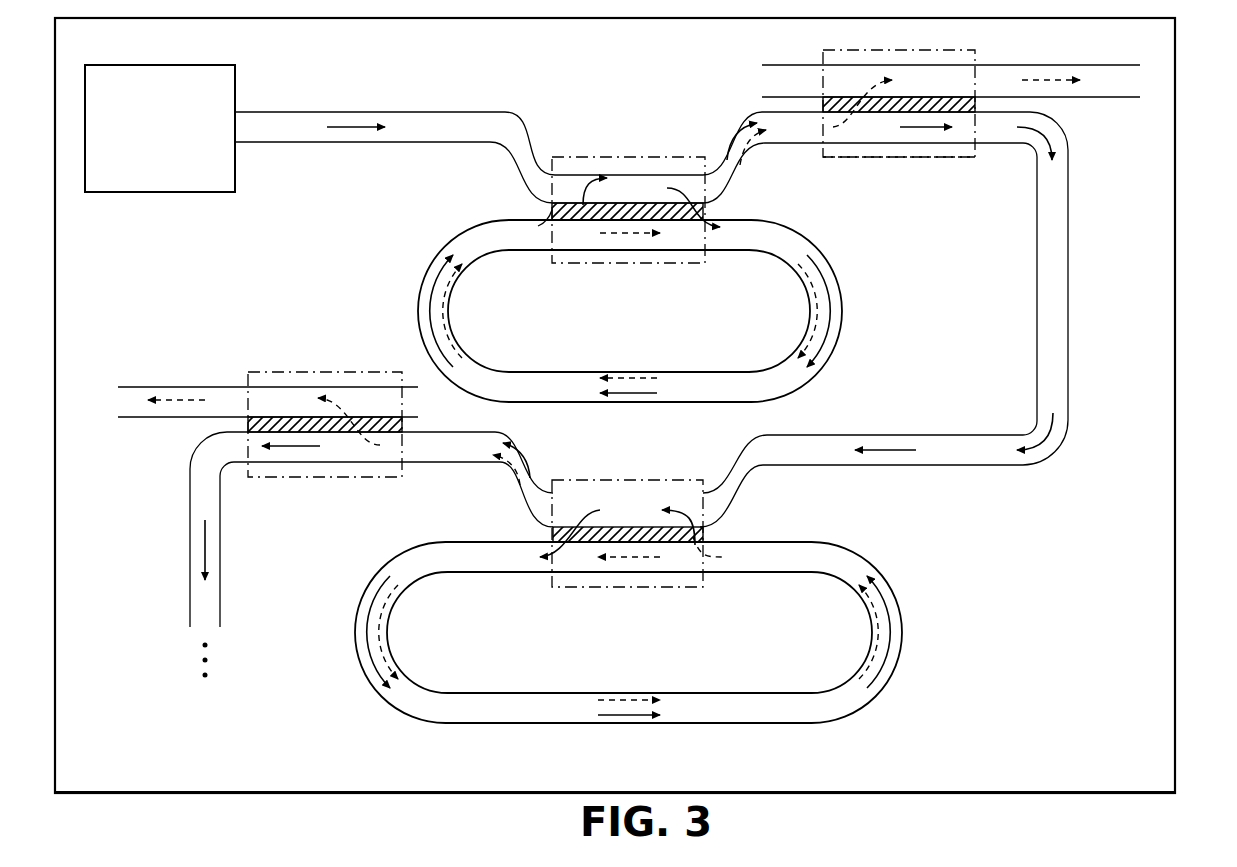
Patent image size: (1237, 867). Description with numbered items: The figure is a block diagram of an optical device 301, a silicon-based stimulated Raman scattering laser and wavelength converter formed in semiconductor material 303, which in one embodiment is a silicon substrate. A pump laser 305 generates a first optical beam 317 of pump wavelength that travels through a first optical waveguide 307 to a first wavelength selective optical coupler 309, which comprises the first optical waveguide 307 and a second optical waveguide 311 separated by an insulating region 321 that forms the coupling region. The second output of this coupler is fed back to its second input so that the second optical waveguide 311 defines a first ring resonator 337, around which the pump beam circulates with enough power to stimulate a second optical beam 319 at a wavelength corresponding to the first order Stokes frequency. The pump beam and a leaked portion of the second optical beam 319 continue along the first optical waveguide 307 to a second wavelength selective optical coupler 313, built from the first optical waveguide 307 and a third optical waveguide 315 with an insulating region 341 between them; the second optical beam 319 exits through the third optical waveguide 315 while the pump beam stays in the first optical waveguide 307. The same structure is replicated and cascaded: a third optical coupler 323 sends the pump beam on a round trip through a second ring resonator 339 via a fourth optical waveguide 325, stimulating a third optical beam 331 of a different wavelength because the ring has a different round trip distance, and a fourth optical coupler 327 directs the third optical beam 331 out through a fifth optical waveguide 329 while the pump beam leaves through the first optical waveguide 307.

The optical device 301 is at (1218, 54).
The semiconductor material 303 is at (1100, 783).
The pump laser 305 is at (172, 65).
The first optical waveguide 307 is at (418, 112).
The first wavelength selective optical coupler 309 is at (595, 158).
The second optical waveguide 311 is at (548, 250).
The second wavelength selective optical coupler 313 is at (890, 160).
The third optical waveguide 315 is at (785, 65).
The first optical beam 317 is at (360, 143).
The second optical beam 319 is at (622, 238).
The insulating region 321 is at (552, 212).
The third optical coupler 323 is at (620, 481).
The fourth optical waveguide 325 is at (468, 573).
The fourth optical coupler 327 is at (348, 478).
The fifth optical waveguide 329 is at (227, 387).
The third optical beam 331 is at (497, 465).
The first ring resonator 337 is at (790, 393).
The second ring resonator 339 is at (427, 708).
The insulating region 341 is at (1040, 110).